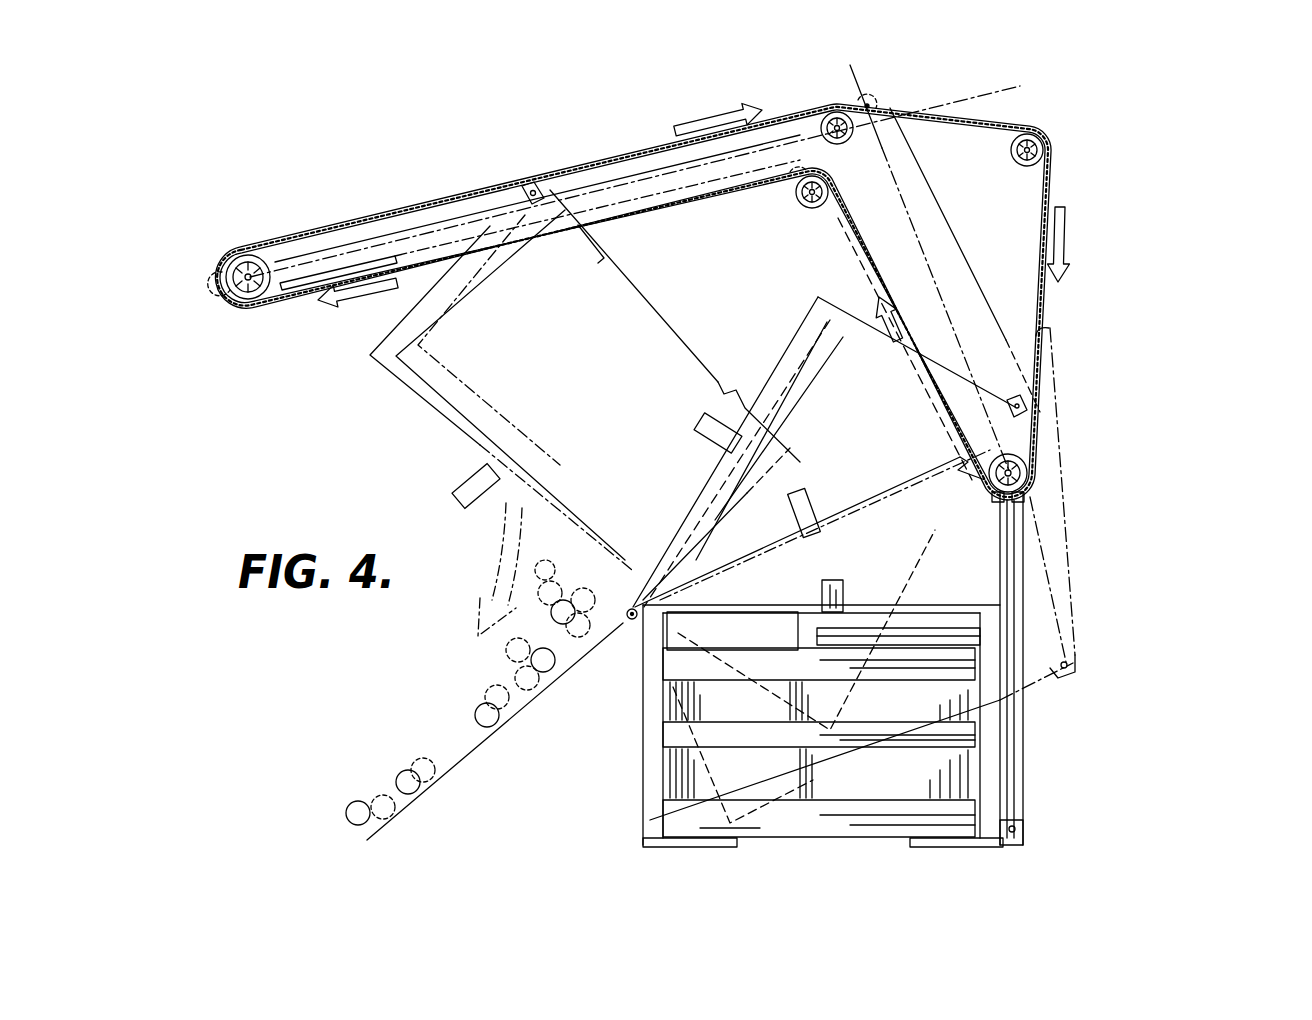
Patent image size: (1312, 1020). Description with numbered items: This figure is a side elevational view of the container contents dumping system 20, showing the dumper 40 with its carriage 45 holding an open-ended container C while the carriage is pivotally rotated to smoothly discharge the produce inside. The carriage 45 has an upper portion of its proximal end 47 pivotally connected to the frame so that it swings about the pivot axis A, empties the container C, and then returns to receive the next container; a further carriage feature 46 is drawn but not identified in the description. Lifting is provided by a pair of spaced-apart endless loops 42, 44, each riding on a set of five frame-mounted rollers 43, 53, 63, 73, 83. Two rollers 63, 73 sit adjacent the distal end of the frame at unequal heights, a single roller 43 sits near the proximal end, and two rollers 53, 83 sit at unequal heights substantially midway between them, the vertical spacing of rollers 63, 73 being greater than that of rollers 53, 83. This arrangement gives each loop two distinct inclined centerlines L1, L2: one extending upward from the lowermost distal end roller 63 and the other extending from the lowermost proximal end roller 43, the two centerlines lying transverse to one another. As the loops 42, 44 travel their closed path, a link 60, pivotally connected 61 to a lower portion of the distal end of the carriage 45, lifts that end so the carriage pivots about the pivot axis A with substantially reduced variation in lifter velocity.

The container contents dumping system 20 is at (1160, 98).
The dumper 40 is at (1133, 688).
The endless loop 42 is at (427, 207).
The endless loop 44 is at (623, 307).
The lowermost proximal end roller 43 is at (248, 277).
The carriage 45 is at (652, 785).
The crate side 46 is at (1035, 745).
The proximal end 47 is at (635, 745).
The roller 53 is at (810, 193).
The link 60 is at (1005, 723).
The pivotal connection 61 is at (1016, 829).
The lowermost distal end roller 63 is at (1026, 476).
The roller 73 is at (1038, 146).
The roller 83 is at (840, 126).
The first centerline L1 is at (912, 257).
The second centerline L2 is at (654, 178).
The pivot axis A is at (627, 622).
The open-ended container C is at (873, 773).